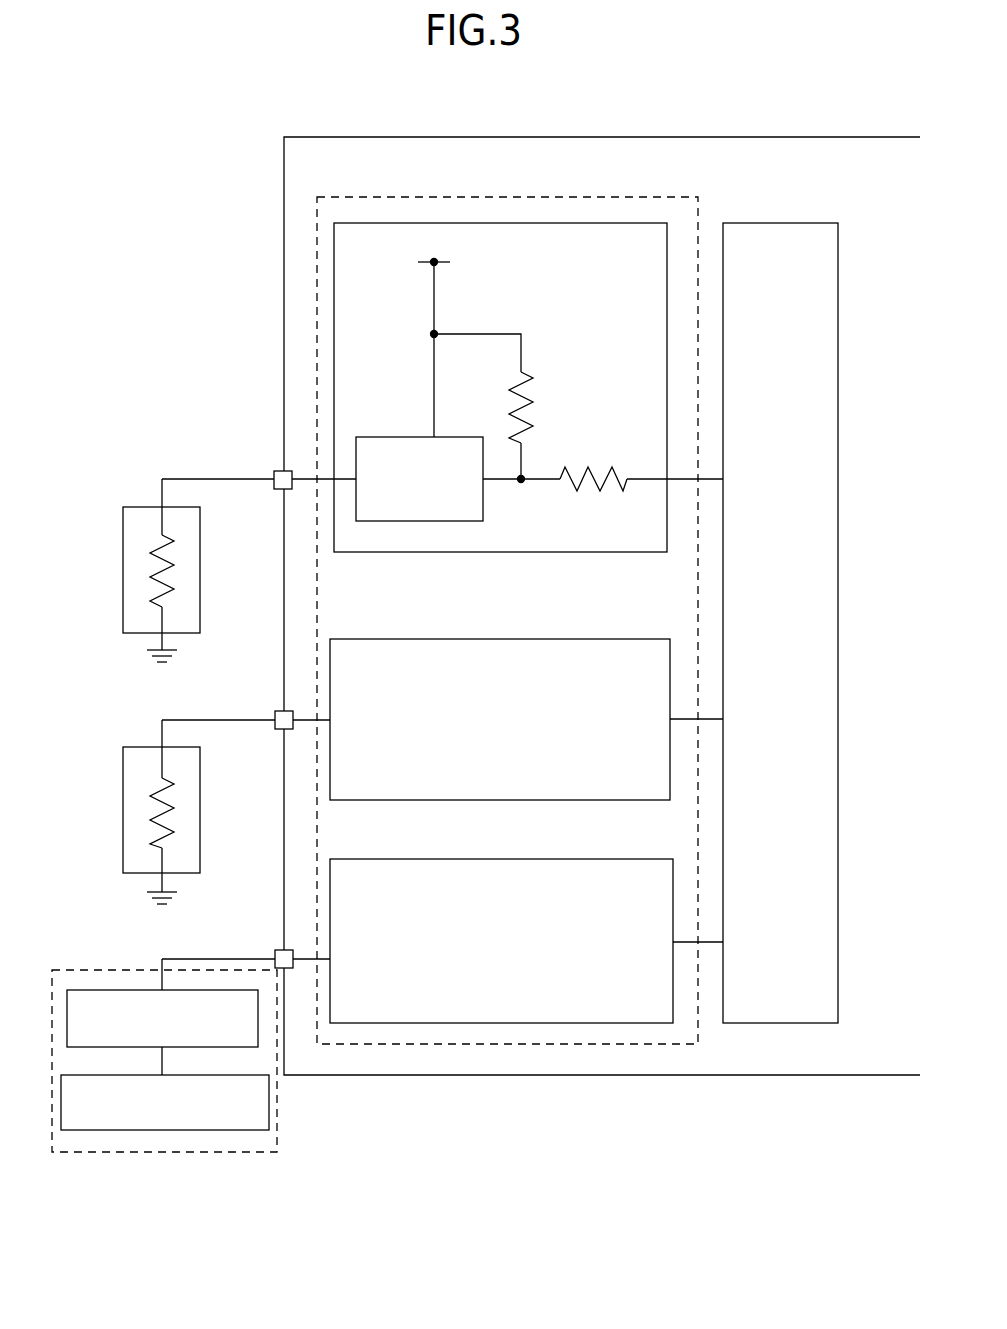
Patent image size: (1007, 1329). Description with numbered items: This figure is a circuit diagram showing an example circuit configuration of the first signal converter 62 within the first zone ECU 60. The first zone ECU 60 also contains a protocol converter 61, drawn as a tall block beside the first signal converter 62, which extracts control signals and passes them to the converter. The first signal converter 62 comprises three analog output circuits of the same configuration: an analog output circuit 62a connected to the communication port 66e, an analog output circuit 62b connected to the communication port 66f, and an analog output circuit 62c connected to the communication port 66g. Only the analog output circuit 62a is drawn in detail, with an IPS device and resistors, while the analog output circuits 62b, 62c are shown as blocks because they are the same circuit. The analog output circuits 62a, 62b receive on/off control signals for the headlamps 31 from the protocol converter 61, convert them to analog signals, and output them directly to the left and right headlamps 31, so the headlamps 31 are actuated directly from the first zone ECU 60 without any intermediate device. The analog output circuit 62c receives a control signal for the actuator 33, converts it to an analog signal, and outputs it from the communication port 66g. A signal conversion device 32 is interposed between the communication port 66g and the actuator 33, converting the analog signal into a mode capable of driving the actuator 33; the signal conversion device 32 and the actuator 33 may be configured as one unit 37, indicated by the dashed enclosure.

The first zone ECU 60 is at (650, 137).
The protocol converter 61 is at (775, 223).
The first signal converter 62 is at (650, 197).
The analog output circuit 62a is at (485, 552).
The analog output circuit 62b is at (552, 638).
The analog output circuit 62c is at (552, 860).
The communication port 66e is at (278, 472).
The communication port 66f is at (277, 712).
The communication port 66g is at (277, 951).
The headlamp 31 is at (137, 505).
The signal conversion device 32 is at (98, 990).
The actuator 33 is at (273, 1118).
The unit of signal conversion device and actuator 37 is at (182, 1153).